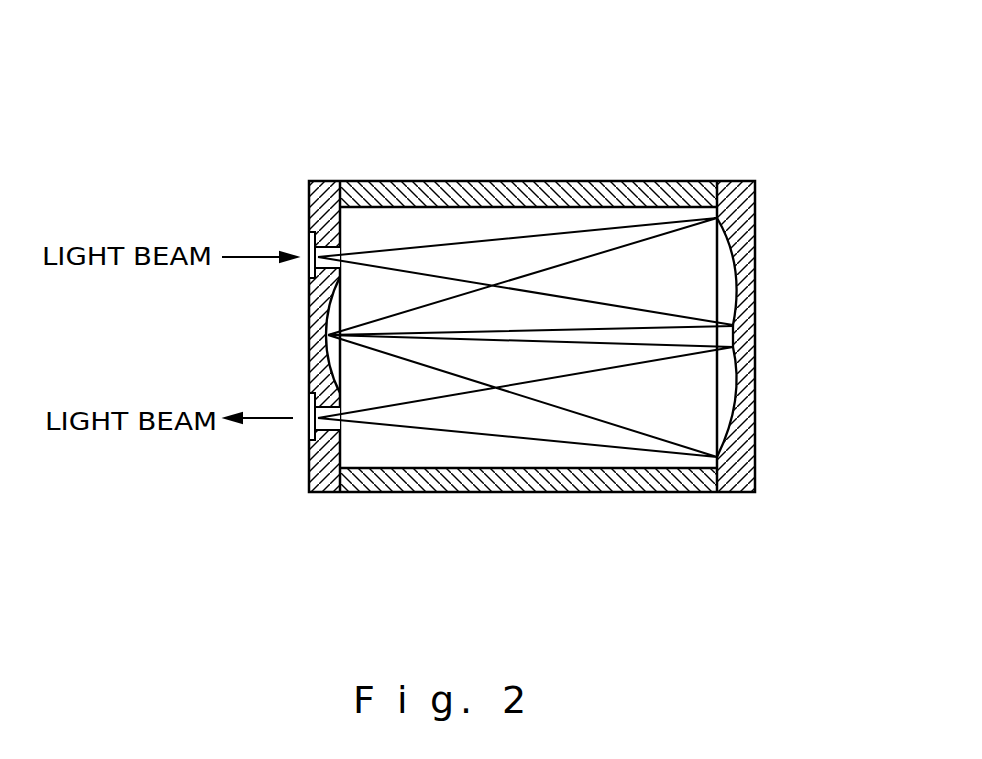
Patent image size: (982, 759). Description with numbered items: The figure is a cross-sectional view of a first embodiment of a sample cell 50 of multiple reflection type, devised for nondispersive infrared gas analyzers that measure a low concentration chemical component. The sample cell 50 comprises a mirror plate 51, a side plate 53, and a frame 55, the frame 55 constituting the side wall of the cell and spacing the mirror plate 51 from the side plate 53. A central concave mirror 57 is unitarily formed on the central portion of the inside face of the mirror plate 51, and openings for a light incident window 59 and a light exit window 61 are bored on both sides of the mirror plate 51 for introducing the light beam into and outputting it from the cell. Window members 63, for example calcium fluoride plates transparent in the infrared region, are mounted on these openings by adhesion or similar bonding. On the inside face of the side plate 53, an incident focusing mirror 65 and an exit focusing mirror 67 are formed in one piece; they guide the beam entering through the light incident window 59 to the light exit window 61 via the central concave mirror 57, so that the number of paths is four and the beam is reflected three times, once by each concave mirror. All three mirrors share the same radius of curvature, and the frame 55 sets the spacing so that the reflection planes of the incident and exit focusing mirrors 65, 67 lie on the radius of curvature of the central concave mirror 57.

The sample cell 50 is at (532, 249).
The mirror plate 51 is at (326, 181).
The side plate 53 is at (740, 181).
The frame 55 is at (610, 181).
The central concave mirror 57 is at (272, 335).
The light incident window 59 is at (308, 247).
The light exit window 61 is at (307, 422).
The window members 63 is at (310, 272).
The incident focusing mirror 65 is at (755, 260).
The exit focusing mirror 67 is at (755, 395).